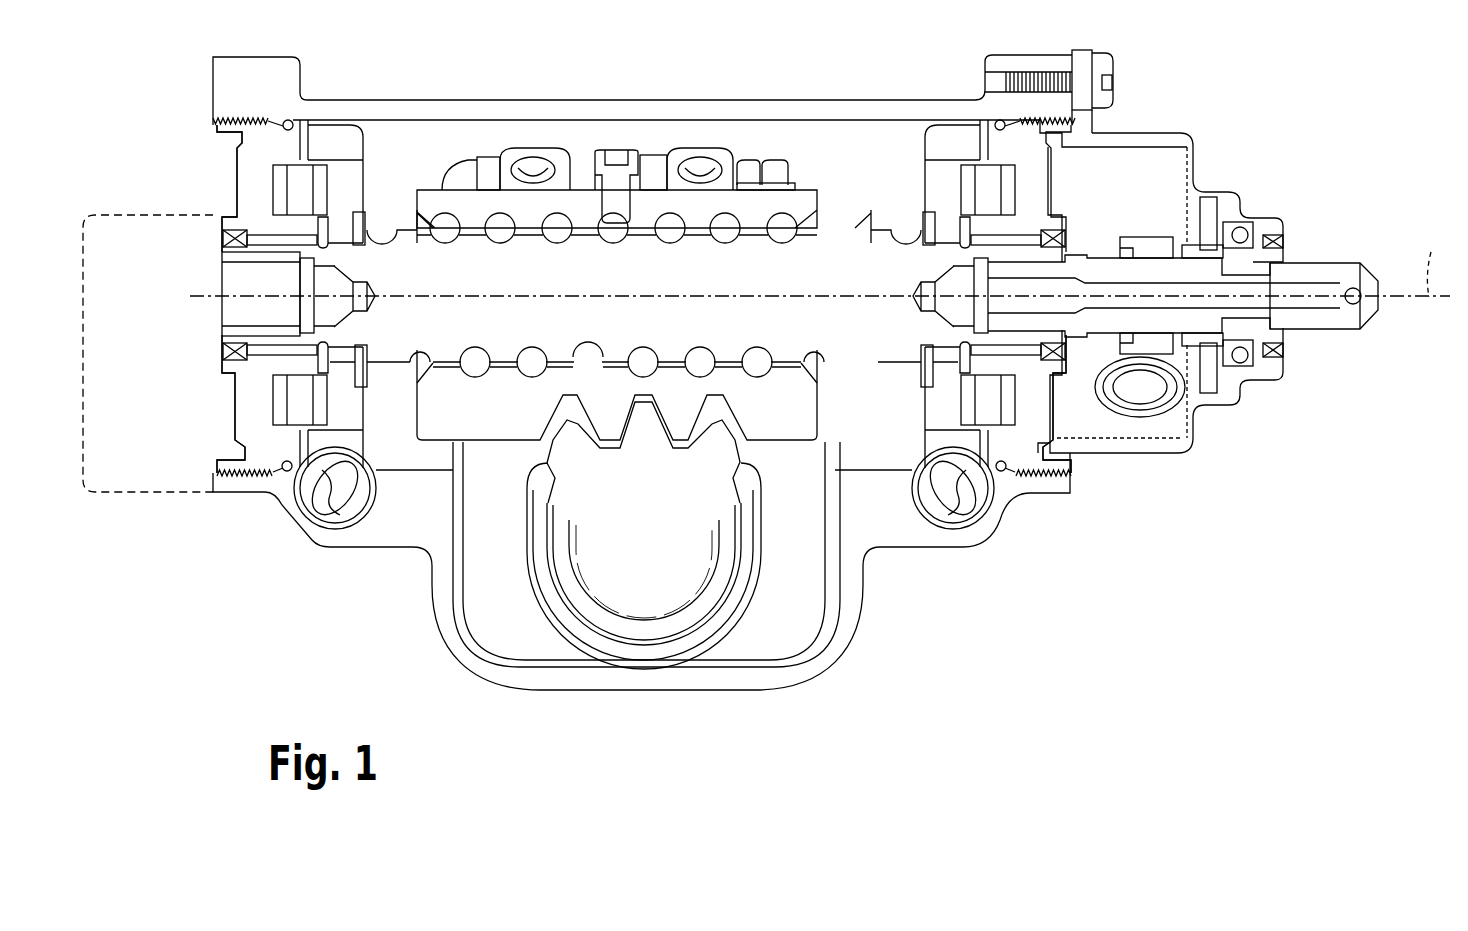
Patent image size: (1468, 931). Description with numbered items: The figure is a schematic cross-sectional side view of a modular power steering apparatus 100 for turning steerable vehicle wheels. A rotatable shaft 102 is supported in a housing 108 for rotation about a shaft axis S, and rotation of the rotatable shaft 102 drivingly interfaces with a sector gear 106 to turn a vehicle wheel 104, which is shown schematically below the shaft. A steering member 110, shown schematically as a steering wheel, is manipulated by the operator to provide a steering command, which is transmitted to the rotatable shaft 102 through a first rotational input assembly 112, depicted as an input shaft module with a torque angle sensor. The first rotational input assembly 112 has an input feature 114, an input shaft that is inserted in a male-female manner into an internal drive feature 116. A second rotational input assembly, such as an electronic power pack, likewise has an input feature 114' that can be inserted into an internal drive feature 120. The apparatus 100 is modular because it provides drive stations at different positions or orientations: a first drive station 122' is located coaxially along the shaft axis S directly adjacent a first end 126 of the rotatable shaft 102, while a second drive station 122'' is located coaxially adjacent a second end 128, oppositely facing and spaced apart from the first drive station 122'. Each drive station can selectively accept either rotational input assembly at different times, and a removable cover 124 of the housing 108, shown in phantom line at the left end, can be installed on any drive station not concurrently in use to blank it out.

The modular power steering apparatus 100 is at (1184, 560).
The rotatable shaft 102 is at (810, 277).
The vehicle wheel 104 is at (685, 748).
The sector gear 106 is at (624, 486).
The housing 108 is at (235, 283).
The steering member 110 is at (1365, 287).
The first rotational input assembly 112 is at (1160, 160).
The input feature 114 is at (1165, 386).
The input feature 114' is at (243, 294).
The internal drive feature 116 is at (262, 286).
The internal drive feature 120 is at (358, 224).
The first drive station 122' is at (1067, 466).
The second drive station 122'' is at (192, 404).
The removable cover 124 is at (162, 518).
The first end 126 is at (1090, 402).
The second end 128 is at (150, 326).
The shaft axis S is at (1439, 263).